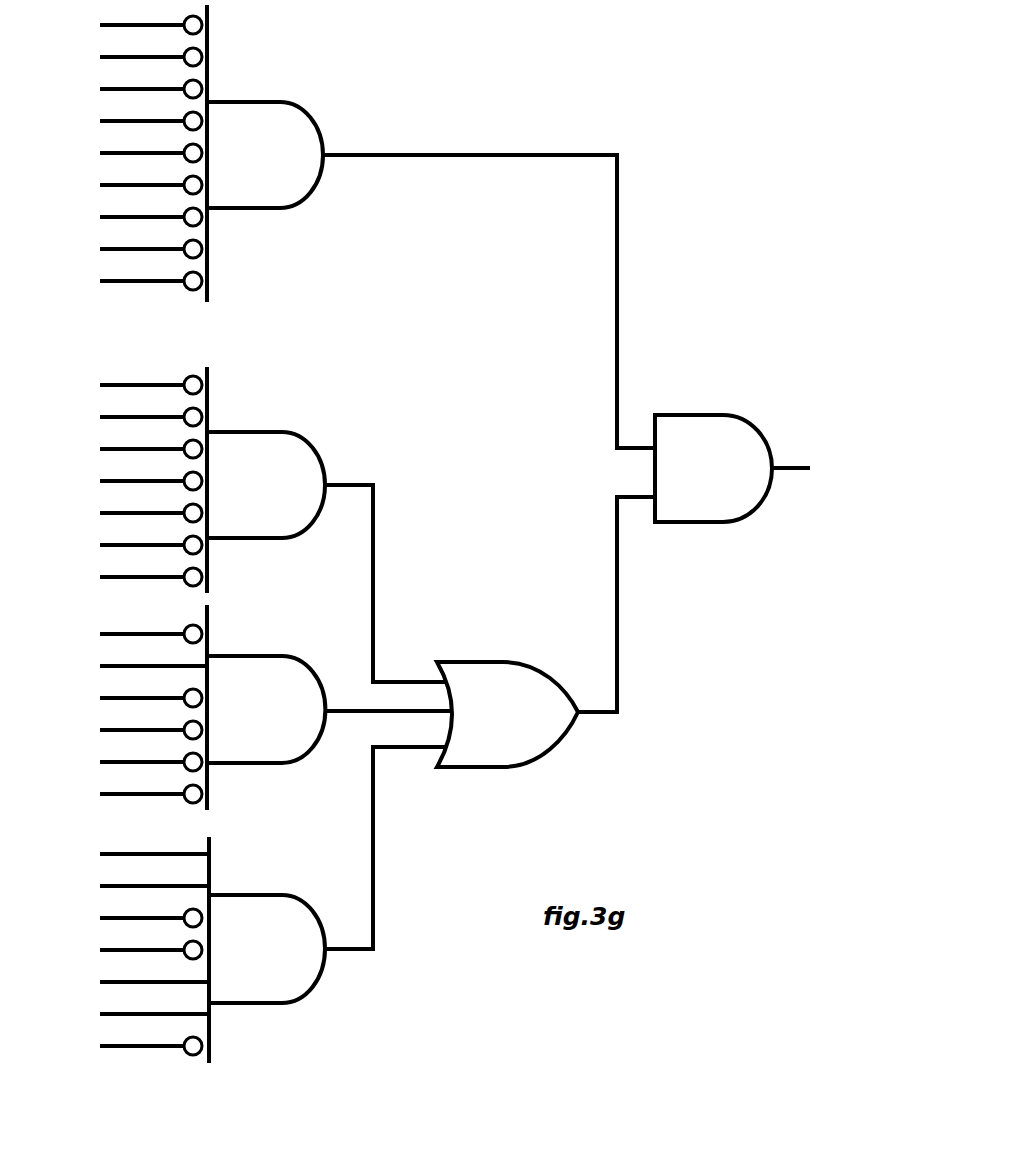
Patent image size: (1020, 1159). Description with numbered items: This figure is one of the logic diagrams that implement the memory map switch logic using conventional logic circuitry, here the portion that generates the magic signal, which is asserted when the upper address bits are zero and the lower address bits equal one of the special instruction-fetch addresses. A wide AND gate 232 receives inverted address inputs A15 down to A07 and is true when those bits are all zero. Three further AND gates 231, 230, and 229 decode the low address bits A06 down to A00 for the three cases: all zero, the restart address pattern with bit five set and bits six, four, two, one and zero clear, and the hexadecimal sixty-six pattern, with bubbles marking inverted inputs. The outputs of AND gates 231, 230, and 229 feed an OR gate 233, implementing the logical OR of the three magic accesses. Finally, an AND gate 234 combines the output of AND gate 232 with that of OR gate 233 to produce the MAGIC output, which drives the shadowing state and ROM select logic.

The AND gate 229 is at (264, 933).
The AND gate 230 is at (264, 690).
The AND gate 231 is at (264, 475).
The AND gate 232 is at (264, 137).
The OR gate 233 is at (504, 698).
The AND gate 234 is at (716, 457).